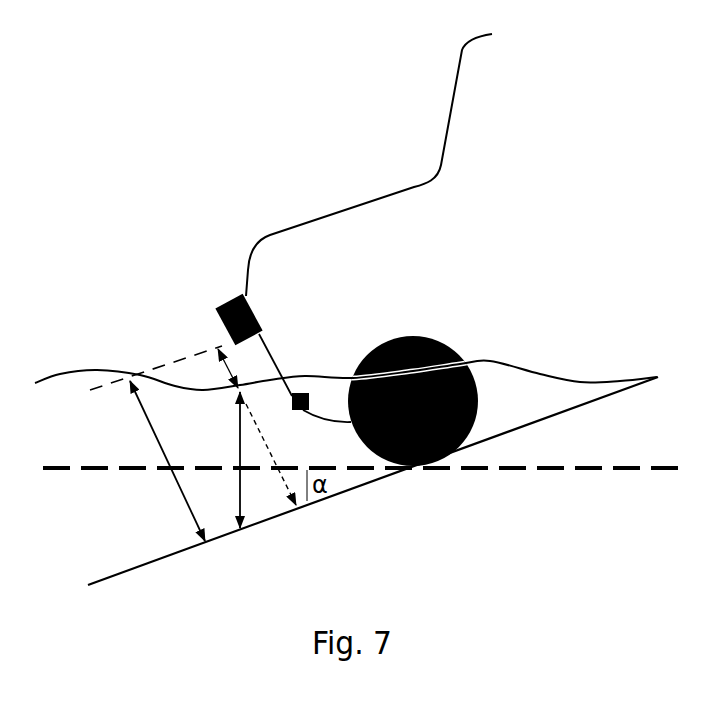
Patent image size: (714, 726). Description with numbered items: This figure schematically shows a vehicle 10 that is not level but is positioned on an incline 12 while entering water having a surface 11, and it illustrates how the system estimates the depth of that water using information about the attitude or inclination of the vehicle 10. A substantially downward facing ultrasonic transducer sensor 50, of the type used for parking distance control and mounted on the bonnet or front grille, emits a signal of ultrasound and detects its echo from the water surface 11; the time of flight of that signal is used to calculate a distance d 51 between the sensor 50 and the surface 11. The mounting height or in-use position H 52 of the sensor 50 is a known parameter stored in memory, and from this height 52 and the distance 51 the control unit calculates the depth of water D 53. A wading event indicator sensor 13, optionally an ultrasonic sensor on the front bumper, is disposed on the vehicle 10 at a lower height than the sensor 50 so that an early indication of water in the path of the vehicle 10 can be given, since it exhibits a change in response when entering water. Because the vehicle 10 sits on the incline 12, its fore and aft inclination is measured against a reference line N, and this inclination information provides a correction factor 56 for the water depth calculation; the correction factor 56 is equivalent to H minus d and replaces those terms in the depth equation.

The vehicle 10 is at (387, 186).
The surface of water 11 is at (554, 375).
The inclined slope 12 is at (214, 548).
The wading event indicator sensor 13 is at (300, 391).
The downward facing ultrasonic transducer sensor 50 is at (246, 294).
The distance d 51 is at (220, 370).
The mounting height H 52 is at (156, 438).
The depth of water D 53 is at (240, 418).
The correction factor 56 is at (256, 424).
The horizontal normal line N is at (636, 467).